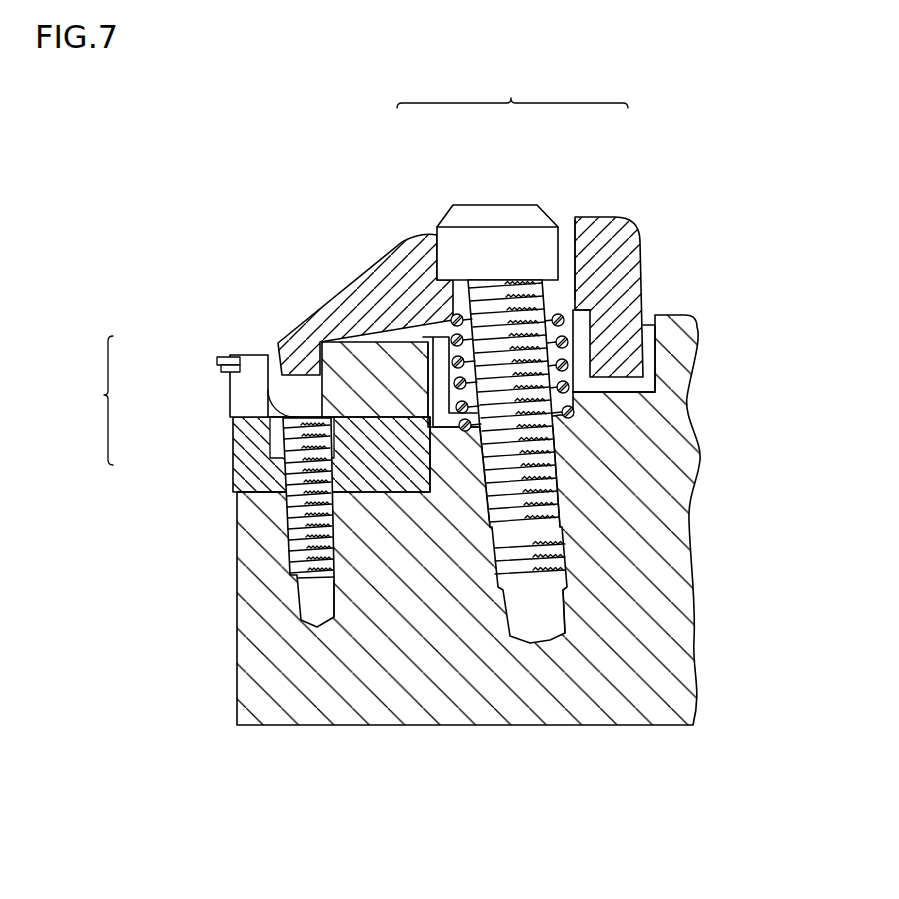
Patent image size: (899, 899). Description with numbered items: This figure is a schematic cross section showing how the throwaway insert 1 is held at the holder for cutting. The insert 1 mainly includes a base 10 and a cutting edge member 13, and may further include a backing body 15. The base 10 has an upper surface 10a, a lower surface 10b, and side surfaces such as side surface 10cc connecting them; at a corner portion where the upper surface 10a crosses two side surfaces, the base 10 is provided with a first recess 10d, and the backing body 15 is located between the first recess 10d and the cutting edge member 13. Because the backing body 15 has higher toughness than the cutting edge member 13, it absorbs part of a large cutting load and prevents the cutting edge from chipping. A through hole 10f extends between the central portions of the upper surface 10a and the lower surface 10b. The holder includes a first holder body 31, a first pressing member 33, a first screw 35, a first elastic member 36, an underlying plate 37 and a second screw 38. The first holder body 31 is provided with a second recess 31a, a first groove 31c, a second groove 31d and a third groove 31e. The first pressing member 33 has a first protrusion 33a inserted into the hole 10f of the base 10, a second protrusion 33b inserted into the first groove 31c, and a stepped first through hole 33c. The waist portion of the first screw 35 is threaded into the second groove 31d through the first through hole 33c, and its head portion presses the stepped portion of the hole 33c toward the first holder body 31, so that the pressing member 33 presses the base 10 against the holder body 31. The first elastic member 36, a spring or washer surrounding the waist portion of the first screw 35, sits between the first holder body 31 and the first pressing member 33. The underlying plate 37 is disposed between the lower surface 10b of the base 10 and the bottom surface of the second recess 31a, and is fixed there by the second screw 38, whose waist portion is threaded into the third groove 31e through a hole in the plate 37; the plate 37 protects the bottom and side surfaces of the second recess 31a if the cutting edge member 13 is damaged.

The throwaway insert 1 is at (99, 400).
The base 10 is at (155, 384).
The upper surface 10a is at (280, 412).
The lower surface 10b is at (318, 420).
The side surface 10cc is at (330, 455).
The first recess 10d is at (252, 375).
The through hole 10f is at (428, 395).
The cutting edge member 13 is at (228, 356).
The backing body 15 is at (228, 367).
The first holder body 31 is at (640, 678).
The second recess 31a is at (480, 420).
The first groove 31c is at (637, 388).
The second groove 31d is at (562, 590).
The third groove 31e is at (336, 620).
The first pressing member 33 is at (512, 89).
The first protrusion 33a is at (298, 357).
The second protrusion 33b is at (645, 305).
The first through hole 33c is at (590, 222).
The first screw 35 is at (553, 478).
The first elastic member 36 is at (572, 410).
The underlying plate 37 is at (333, 478).
The second screw 38 is at (267, 495).